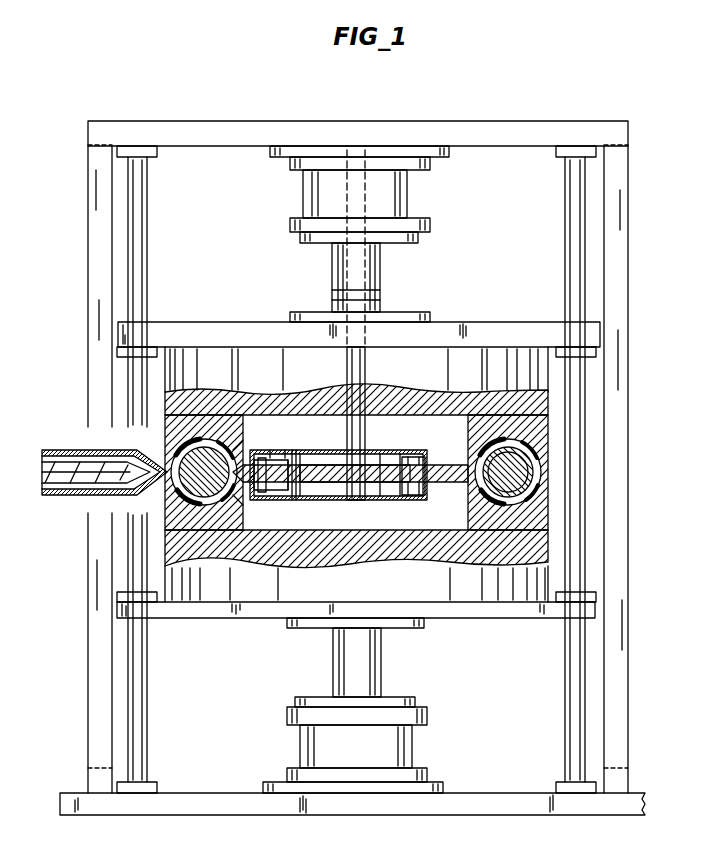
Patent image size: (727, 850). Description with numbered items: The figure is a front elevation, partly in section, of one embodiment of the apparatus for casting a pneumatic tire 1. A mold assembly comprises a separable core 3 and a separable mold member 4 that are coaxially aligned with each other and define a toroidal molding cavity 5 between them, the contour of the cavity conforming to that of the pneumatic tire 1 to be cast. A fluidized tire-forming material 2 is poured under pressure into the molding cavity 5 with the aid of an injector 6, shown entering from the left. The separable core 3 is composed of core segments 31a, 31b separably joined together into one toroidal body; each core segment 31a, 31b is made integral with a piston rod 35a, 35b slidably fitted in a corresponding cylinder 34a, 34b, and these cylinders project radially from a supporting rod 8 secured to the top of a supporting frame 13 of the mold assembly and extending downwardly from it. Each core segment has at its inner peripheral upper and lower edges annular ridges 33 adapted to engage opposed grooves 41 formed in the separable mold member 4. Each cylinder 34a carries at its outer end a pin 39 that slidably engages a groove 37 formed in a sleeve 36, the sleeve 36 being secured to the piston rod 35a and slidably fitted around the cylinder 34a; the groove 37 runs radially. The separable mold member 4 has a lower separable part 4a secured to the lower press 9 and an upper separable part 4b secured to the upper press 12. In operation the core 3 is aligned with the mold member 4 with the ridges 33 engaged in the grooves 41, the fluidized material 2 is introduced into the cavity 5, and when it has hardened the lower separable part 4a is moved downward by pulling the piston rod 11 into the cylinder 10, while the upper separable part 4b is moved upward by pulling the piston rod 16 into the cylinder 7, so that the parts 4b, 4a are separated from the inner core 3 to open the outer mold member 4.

The pneumatic tire 1 is at (538, 465).
The fluidized tire-forming material 2 is at (78, 497).
The separable core 3 is at (486, 395).
The separable mold member 4 is at (540, 528).
The lower separable part 4a is at (548, 528).
The upper separable part 4b is at (522, 392).
The molding cavity 5 is at (550, 428).
The injector 6 is at (60, 450).
The cylinder 7 is at (398, 192).
The supporting rod 8 is at (365, 270).
The lower press 9 is at (540, 583).
The cylinder 10 is at (388, 746).
The piston rod 11 is at (370, 668).
The upper press 12 is at (548, 350).
The supporting frame 13 is at (487, 135).
The piston rod 16 is at (380, 298).
The core segment 31a is at (168, 503).
The core segment 31b is at (543, 500).
The annular ridge 33 is at (235, 450).
The cylinder 34a is at (330, 450).
The cylinder 34b is at (400, 482).
The piston rod 35a is at (268, 482).
The piston rod 35b is at (450, 485).
The sleeve 36 is at (262, 452).
The groove 37 is at (292, 450).
The pin 39 is at (287, 450).
The groove 41 is at (453, 470).